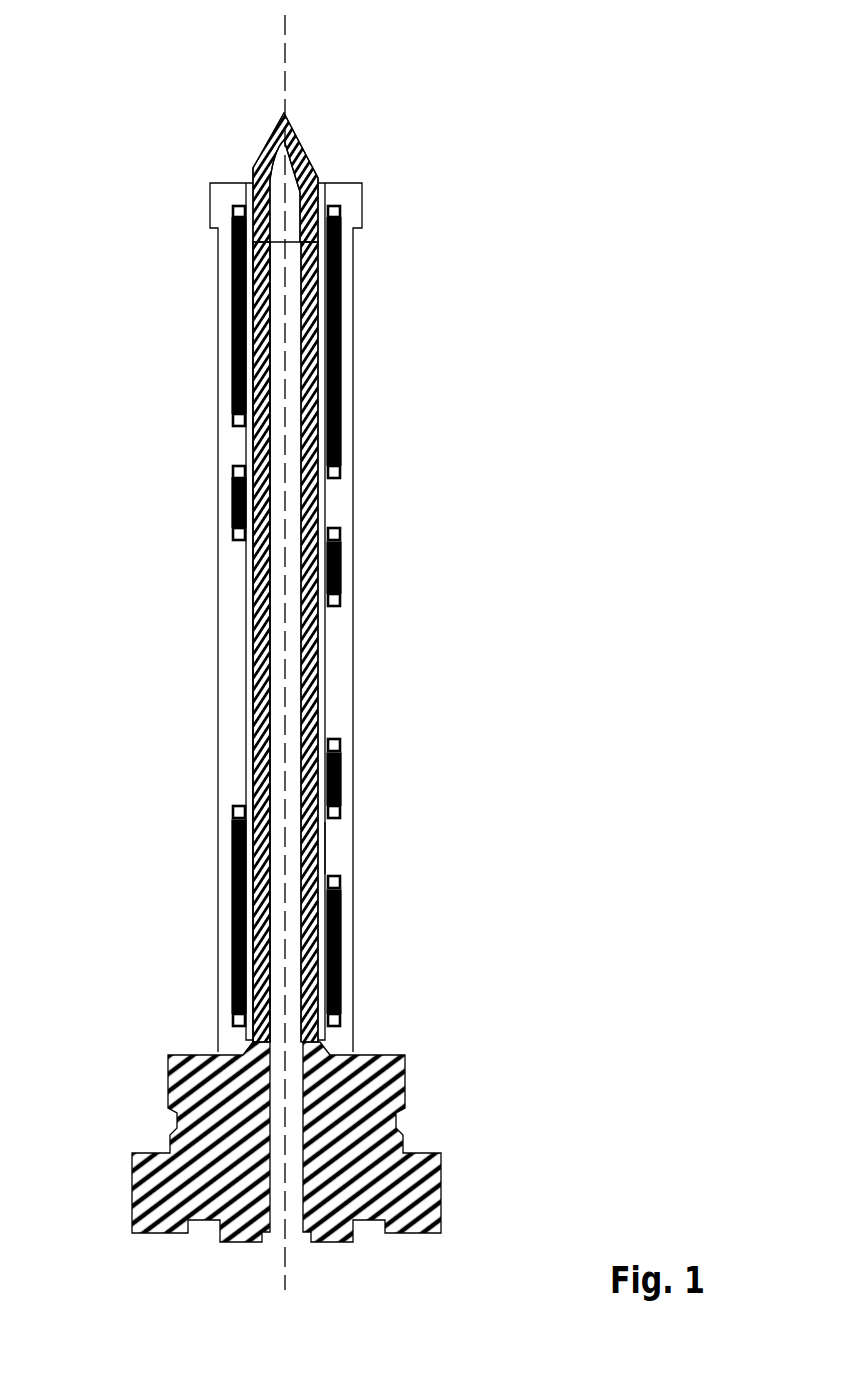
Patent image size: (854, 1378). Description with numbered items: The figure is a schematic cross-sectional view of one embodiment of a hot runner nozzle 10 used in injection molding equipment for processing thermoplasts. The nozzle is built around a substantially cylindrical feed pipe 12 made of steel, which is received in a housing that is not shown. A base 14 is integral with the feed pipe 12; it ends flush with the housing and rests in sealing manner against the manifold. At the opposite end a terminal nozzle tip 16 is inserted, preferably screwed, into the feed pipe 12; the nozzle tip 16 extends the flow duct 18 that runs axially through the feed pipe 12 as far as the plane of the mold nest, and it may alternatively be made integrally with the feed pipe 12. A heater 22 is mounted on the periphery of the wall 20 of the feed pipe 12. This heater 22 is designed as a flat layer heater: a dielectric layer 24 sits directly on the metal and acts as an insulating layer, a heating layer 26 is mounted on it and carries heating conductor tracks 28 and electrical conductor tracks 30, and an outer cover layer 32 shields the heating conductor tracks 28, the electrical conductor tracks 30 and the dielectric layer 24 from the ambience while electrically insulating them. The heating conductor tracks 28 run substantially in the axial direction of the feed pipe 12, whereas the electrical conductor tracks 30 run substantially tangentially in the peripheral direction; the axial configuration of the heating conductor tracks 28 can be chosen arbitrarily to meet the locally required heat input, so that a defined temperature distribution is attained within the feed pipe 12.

The hot runner nozzle 10 is at (390, 79).
The feed pipe 12 is at (308, 300).
The base 14 is at (437, 1192).
The nozzle tip 16 is at (270, 142).
The flow duct 18 is at (275, 443).
The wall 20 is at (254, 703).
The heater 22 is at (190, 545).
The dielectric layer 24 is at (245, 610).
The heating layer 26 is at (384, 615).
The heating conductor tracks 28 is at (340, 376).
The electrical conductor tracks 30 is at (336, 211).
The outer cover layer 32 is at (335, 852).